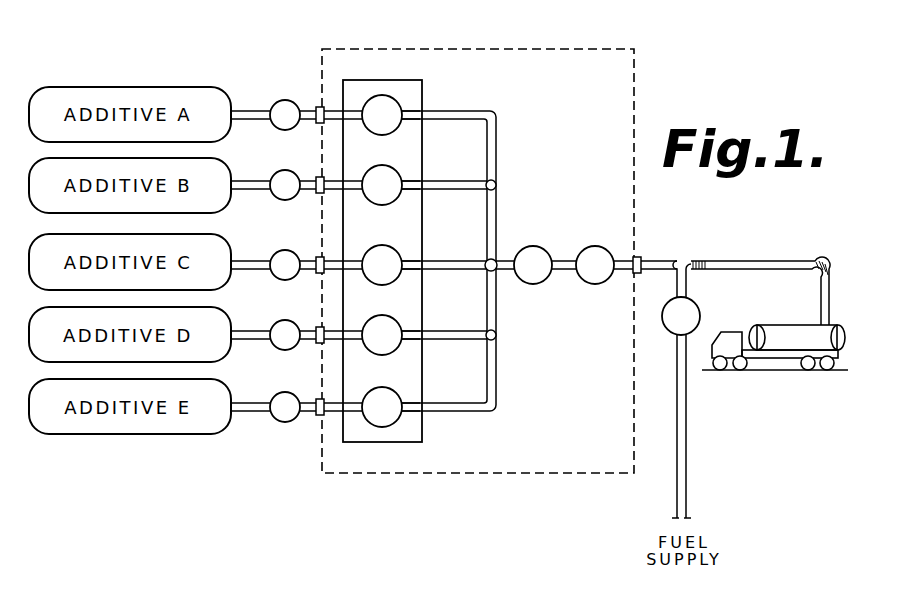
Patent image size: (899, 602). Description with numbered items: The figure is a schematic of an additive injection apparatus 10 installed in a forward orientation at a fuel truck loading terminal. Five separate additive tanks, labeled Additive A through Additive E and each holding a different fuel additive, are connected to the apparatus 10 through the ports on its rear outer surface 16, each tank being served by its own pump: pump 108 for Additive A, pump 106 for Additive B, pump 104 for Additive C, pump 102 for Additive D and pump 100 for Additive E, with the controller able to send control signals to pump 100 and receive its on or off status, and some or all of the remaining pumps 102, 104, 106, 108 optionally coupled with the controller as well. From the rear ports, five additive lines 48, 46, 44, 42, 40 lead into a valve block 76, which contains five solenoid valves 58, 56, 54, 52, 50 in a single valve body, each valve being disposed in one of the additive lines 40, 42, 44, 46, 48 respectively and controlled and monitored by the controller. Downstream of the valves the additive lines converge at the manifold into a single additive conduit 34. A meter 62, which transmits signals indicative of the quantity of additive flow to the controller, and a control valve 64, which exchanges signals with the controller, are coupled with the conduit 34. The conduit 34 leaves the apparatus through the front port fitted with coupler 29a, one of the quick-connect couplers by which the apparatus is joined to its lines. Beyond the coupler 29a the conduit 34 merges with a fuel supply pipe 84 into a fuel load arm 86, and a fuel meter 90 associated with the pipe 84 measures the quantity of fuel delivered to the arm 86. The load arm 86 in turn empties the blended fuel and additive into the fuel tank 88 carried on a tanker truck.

The additive injection apparatus 10 is at (453, 48).
The rear outer surface 16 is at (322, 52).
The coupler 29a is at (640, 257).
The additive conduit 34 is at (568, 272).
The additive line 40 is at (352, 416).
The additive line 42 is at (351, 342).
The additive line 44 is at (352, 270).
The additive line 46 is at (349, 180).
The additive line 48 is at (333, 110).
The solenoid valve 50 is at (398, 418).
The solenoid valve 52 is at (398, 346).
The solenoid valve 54 is at (398, 276).
The solenoid valve 56 is at (398, 195).
The solenoid valve 58 is at (398, 125).
The meter 62 is at (548, 248).
The control valve 64 is at (593, 247).
The valve block 76 is at (422, 83).
The fuel supply pipe 84 is at (688, 450).
The fuel load arm 86 is at (750, 262).
The fuel tank 88 is at (797, 323).
The fuel meter 90 is at (696, 309).
The pump 100 is at (284, 421).
The pump 102 is at (283, 349).
The pump 104 is at (283, 279).
The pump 106 is at (283, 199).
The pump 108 is at (283, 129).